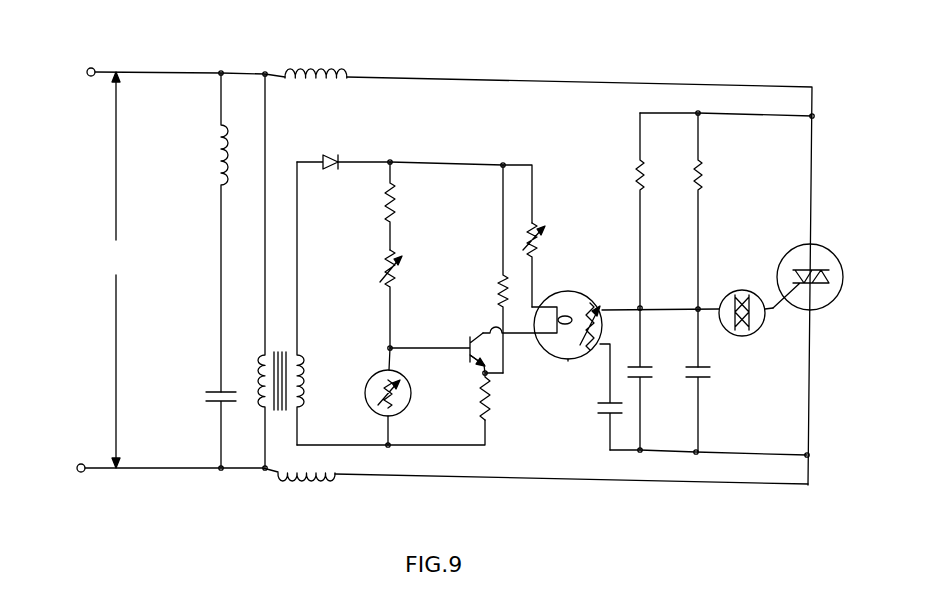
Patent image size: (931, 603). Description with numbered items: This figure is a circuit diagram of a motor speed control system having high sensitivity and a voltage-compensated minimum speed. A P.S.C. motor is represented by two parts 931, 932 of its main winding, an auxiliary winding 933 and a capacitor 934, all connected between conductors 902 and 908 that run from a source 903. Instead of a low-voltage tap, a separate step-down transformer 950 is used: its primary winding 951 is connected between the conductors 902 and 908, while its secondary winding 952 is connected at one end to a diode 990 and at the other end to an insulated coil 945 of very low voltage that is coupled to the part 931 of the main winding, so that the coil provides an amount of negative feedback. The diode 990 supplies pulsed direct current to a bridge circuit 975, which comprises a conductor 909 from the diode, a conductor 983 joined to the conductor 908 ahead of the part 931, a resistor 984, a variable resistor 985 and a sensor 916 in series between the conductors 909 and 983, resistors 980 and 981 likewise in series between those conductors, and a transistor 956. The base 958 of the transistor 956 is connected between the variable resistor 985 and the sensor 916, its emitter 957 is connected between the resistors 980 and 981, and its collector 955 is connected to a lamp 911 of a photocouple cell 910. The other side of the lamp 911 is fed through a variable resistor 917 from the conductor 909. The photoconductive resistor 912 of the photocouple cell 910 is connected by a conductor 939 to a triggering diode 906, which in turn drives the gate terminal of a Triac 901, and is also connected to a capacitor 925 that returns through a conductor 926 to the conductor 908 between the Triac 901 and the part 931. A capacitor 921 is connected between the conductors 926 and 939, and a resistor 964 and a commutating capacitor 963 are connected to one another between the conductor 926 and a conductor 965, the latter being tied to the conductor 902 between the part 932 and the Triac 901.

The Triac 901 is at (823, 253).
The conductor 902 is at (178, 48).
The source 903 is at (100, 266).
The triggering diode 906 is at (740, 291).
The conductor 908 is at (172, 468).
The conductor 909 is at (512, 163).
The photocouple cell 910 is at (586, 296).
The lamp 911 is at (556, 296).
The photoconductive resistor 912 is at (568, 360).
The sensor 916 is at (396, 418).
The variable resistor 917 is at (540, 236).
The capacitor 921 is at (646, 372).
The capacitor 925 is at (606, 411).
The conductor 926 is at (715, 455).
The part of main winding 931 is at (298, 482).
The part of main winding 932 is at (310, 70).
The auxiliary winding 933 is at (216, 143).
The capacitor 934 is at (210, 392).
The conductor 939 is at (660, 308).
The insulated coil 945 is at (300, 462).
The step-down transformer 950 is at (300, 343).
The primary winding 951 is at (258, 370).
The secondary winding 952 is at (305, 368).
The collector 955 is at (500, 348).
The transistor 956 is at (482, 329).
The emitter 957 is at (475, 363).
The base 958 is at (467, 345).
The commutating capacitor 963 is at (700, 372).
The resistor 964 is at (705, 190).
The conductor 965 is at (746, 113).
The bridge circuit 975 is at (485, 118).
The resistor 980 is at (498, 290).
The resistor 981 is at (490, 400).
The conductor 983 is at (421, 450).
The resistor 984 is at (385, 205).
The variable resistor 985 is at (383, 268).
The diode 990 is at (323, 158).